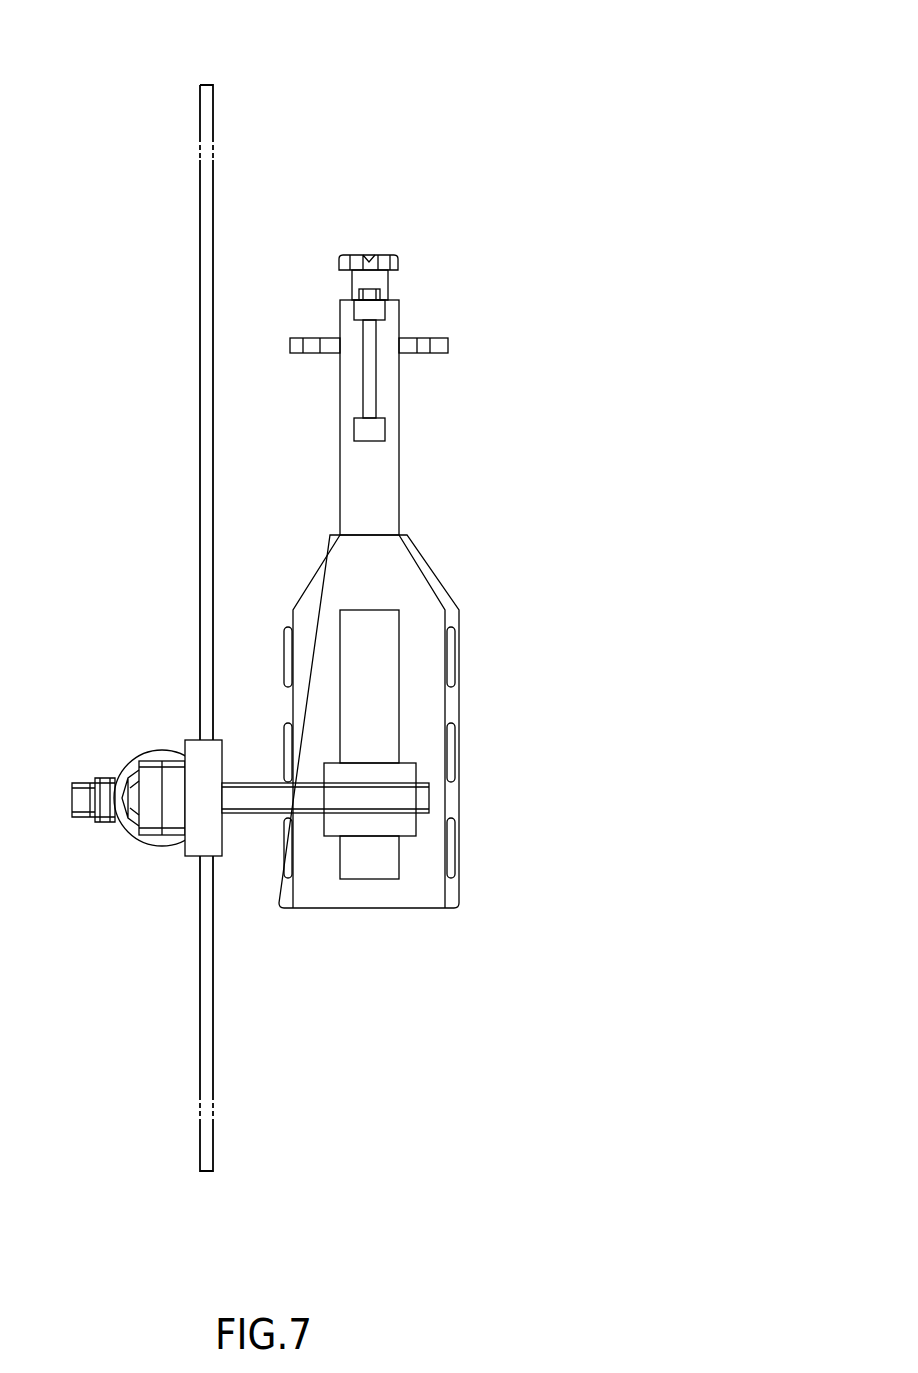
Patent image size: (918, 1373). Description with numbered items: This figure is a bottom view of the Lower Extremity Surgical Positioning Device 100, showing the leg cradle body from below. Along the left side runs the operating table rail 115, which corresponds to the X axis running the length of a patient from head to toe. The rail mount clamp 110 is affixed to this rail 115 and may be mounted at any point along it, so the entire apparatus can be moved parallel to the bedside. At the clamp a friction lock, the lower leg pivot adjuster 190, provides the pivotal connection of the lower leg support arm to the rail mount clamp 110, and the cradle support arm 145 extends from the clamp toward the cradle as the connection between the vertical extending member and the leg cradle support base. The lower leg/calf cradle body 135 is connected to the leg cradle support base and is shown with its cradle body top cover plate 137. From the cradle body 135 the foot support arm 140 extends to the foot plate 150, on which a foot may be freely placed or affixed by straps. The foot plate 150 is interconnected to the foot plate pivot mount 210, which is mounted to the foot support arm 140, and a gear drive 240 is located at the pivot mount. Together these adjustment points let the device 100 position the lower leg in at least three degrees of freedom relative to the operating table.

The positioning device 100 is at (561, 92).
The rail mount clamp 110 is at (185, 860).
The operating table rail 115 is at (200, 410).
The lower leg/calf cradle body 135 is at (422, 595).
The cradle body top cover plate 137 is at (455, 707).
The foot support arm 140 is at (400, 442).
The cradle support arm 145 is at (422, 800).
The foot plate 150 is at (449, 343).
The lower leg pivot adjuster 190 is at (162, 778).
The foot plate pivot mount 210 is at (400, 263).
The gear drive 240 is at (388, 297).